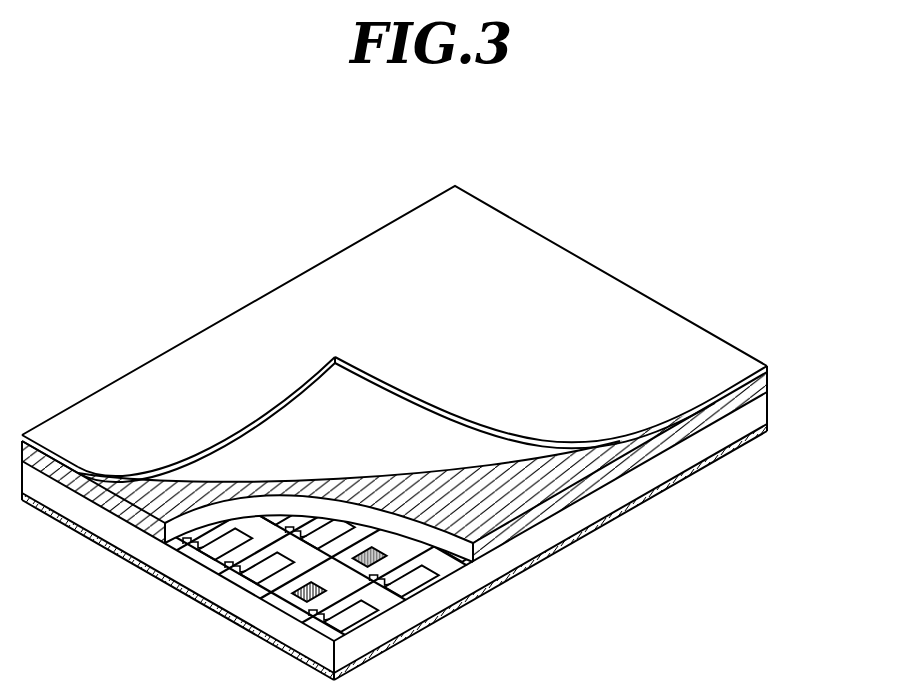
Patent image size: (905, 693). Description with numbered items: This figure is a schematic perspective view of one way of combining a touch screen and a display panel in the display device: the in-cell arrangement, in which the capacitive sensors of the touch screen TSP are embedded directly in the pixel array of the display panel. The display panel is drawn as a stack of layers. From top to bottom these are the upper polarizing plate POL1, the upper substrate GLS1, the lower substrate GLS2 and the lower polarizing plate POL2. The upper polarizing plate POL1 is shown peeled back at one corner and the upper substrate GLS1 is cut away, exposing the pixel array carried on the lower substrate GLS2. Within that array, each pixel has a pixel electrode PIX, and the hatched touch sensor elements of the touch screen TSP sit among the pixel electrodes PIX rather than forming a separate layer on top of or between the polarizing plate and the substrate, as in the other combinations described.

The upper polarizing plate POL1 is at (770, 368).
The upper substrate GLS1 is at (770, 383).
The lower substrate GLS2 is at (762, 408).
The lower polarizing plate POL2 is at (768, 430).
The touch screen TSP is at (300, 594).
The pixel electrode PIX is at (330, 627).